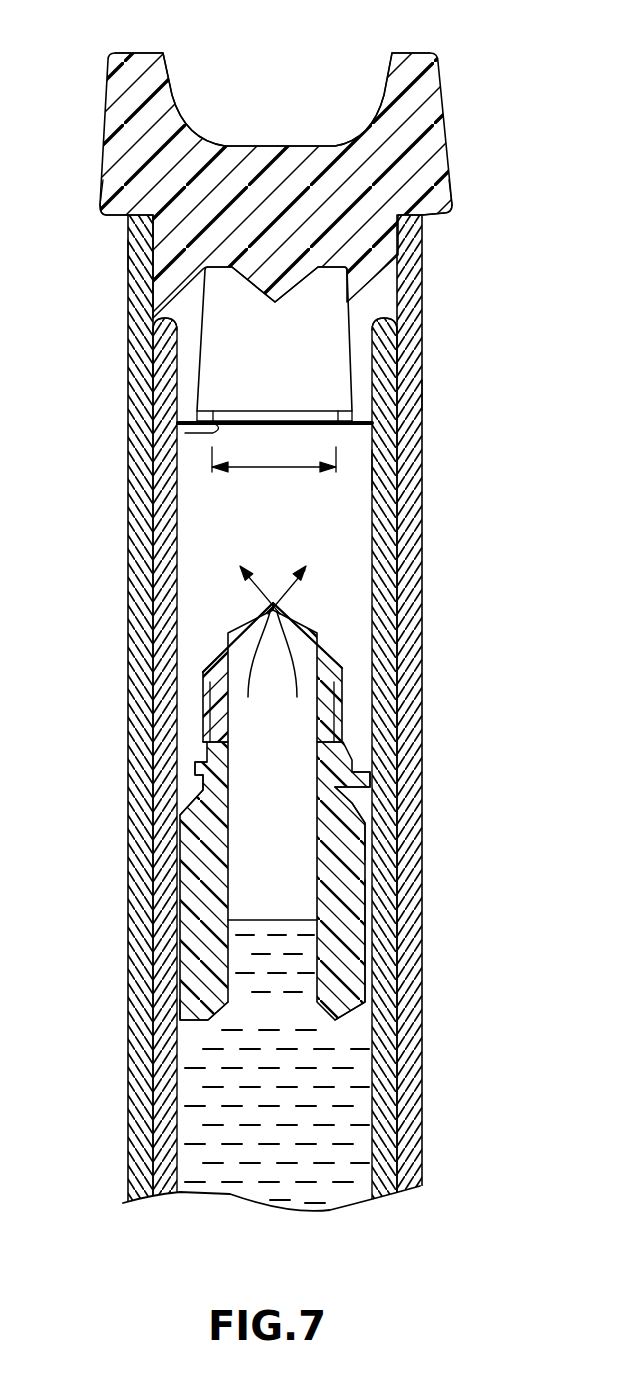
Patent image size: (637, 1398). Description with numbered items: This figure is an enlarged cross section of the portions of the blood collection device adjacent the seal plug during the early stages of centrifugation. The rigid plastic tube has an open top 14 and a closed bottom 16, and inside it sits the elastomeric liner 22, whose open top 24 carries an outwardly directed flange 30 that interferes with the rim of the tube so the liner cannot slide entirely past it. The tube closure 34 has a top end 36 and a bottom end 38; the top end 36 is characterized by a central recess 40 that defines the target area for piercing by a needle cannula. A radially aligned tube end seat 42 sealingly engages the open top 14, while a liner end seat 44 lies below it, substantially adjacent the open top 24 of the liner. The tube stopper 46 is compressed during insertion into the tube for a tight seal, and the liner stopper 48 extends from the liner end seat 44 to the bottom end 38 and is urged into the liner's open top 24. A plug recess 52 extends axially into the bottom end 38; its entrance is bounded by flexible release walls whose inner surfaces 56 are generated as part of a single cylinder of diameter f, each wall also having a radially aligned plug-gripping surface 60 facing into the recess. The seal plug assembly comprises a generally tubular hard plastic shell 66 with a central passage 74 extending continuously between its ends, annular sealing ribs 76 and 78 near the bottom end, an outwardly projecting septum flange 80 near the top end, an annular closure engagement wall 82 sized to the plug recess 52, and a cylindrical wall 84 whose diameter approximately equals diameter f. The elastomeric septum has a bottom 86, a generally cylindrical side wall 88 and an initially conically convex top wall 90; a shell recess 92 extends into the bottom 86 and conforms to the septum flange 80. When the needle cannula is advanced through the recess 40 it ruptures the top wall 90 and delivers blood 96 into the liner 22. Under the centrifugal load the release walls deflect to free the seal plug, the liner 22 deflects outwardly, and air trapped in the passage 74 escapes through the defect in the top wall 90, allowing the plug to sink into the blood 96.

The open top 14 is at (415, 212).
The closed bottom 16 is at (425, 640).
The elastomeric liner 22 is at (392, 432).
The open top 24 is at (380, 302).
The outwardly directed flange 30 is at (413, 397).
The tube closure 34 is at (460, 90).
The top end 36 is at (398, 55).
The bottom end 38 is at (380, 478).
The central recess 40 is at (330, 140).
The tube end seat 42 is at (120, 214).
The liner end seat 44 is at (155, 330).
The tube stopper 46 is at (135, 248).
The liner stopper 48 is at (158, 372).
The plug recess 52 is at (380, 368).
The inner surfaces 56 is at (190, 428).
The plug-gripping surface 60 is at (215, 411).
The shell 66 is at (375, 910).
The central passage 74 is at (232, 868).
The annular sealing rib 76 is at (175, 1020).
The annular sealing rib 78 is at (195, 795).
The septum flange 80 is at (330, 716).
The closure engagement wall 82 is at (352, 775).
The cylindrical wall 84 is at (340, 790).
The bottom 86 is at (200, 770).
The cylindrical side wall 88 is at (205, 703).
The conically convex top wall 90 is at (247, 622).
The shell recess 92 is at (330, 716).
The blood 96 is at (353, 1115).
The diameter f is at (255, 469).